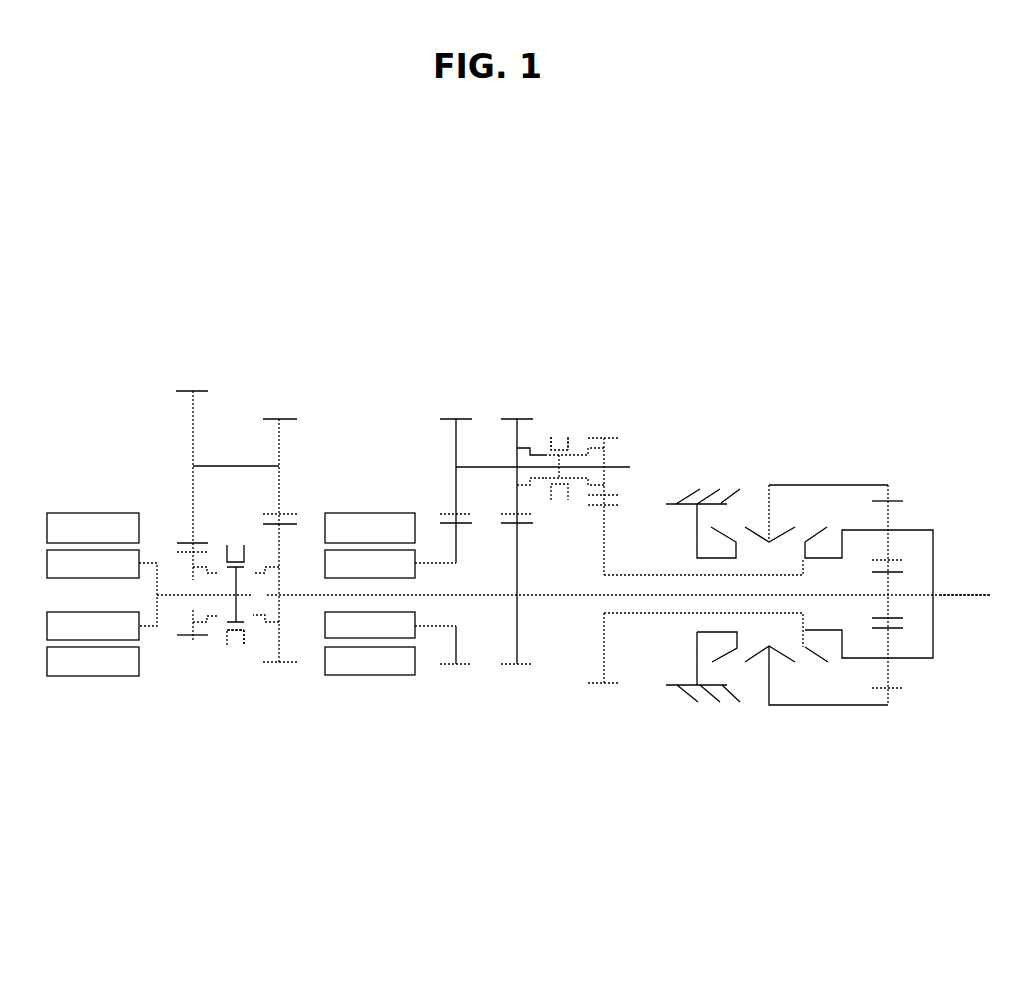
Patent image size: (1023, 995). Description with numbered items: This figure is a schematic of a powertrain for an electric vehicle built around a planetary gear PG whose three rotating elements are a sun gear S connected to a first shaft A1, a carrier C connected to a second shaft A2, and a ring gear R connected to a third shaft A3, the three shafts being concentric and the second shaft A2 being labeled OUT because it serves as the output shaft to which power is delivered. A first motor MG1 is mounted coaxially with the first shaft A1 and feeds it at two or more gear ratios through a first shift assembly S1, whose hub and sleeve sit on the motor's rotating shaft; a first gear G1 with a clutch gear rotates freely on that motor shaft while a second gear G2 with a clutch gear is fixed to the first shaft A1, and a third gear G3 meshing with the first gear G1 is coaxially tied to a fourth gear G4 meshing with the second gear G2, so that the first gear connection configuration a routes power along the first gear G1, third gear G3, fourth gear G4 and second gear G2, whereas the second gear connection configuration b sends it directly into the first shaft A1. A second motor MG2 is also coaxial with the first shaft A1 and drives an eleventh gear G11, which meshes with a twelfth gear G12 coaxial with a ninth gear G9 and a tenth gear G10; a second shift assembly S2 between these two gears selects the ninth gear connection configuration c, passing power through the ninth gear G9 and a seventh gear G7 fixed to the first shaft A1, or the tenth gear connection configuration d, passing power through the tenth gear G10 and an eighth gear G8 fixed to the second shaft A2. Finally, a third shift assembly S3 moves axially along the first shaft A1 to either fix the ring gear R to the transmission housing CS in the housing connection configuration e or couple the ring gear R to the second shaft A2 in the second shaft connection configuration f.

The first motor MG1 is at (102, 584).
The second motor MG2 is at (390, 583).
The first gear G1 is at (188, 645).
The second gear G2 is at (283, 664).
The third gear G3 is at (196, 390).
The fourth gear G4 is at (287, 418).
The seventh gear G7 is at (512, 667).
The eighth gear G8 is at (598, 685).
The ninth gear G9 is at (511, 418).
The tenth gear G10 is at (605, 437).
The eleventh gear G11 is at (448, 667).
The twelfth gear G12 is at (450, 418).
The first shift assembly S1 is at (238, 653).
The second shift assembly S2 is at (558, 432).
The third shift assembly S3 is at (757, 665).
The first gear connection configuration a is at (223, 636).
The second gear connection configuration b is at (253, 636).
The ninth gear connection configuration c is at (550, 438).
The tenth gear connection configuration d is at (575, 438).
The housing connection configuration e is at (729, 665).
The second shaft connection configuration f is at (813, 663).
The transmission housing CS is at (718, 498).
The first shaft A1 is at (900, 595).
The second shaft A2 is at (928, 531).
The third shaft A3 is at (840, 484).
The ring gear R is at (898, 500).
The carrier C is at (912, 530).
The sun gear S is at (898, 567).
The planetary gear PG is at (817, 600).
The output shaft OUT is at (978, 598).